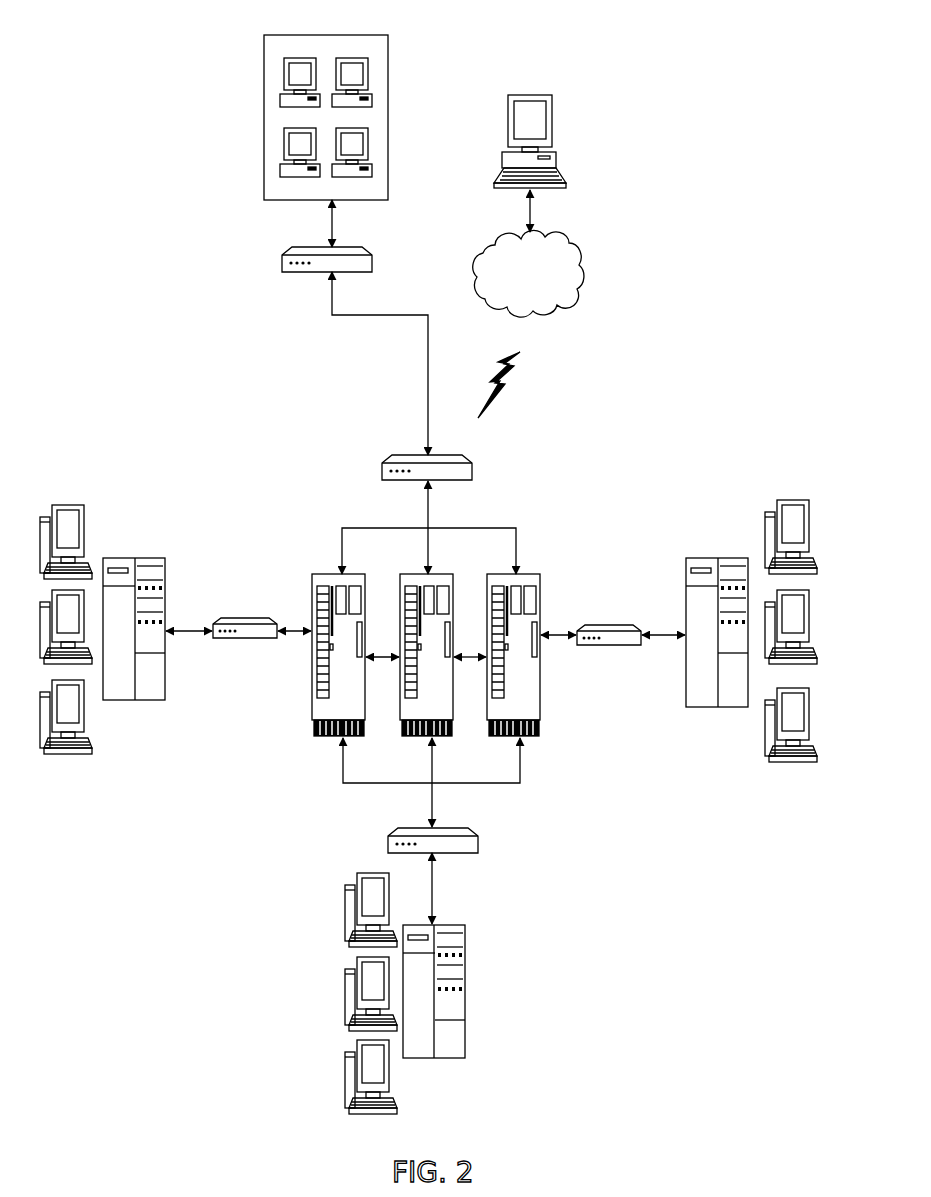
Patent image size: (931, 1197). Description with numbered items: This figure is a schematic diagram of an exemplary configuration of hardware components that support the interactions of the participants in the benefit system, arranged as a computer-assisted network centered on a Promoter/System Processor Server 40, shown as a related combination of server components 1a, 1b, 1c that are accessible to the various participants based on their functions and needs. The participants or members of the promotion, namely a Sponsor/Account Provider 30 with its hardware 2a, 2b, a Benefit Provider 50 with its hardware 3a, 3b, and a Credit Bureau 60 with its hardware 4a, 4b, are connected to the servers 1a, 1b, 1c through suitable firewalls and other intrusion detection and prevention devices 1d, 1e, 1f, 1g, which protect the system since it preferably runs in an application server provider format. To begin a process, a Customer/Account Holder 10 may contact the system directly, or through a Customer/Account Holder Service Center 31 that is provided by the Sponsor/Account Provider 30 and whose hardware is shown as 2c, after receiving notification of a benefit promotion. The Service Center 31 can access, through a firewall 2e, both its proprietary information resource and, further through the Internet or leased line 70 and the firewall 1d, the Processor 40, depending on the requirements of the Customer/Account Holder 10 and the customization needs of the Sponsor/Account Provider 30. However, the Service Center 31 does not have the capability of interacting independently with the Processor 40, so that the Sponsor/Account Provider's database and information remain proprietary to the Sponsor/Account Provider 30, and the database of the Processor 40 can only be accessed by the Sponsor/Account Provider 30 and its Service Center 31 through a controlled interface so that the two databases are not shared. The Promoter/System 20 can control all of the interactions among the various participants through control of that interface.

The server component 1a is at (331, 641).
The server component 1b is at (420, 641).
The server component 1c is at (507, 641).
The firewall 1d is at (429, 501).
The firewall 1e is at (613, 620).
The firewall 1f is at (431, 795).
The firewall 1g is at (238, 613).
The Sponsor/Account Provider hardware component 2a is at (134, 615).
The Sponsor/Account Provider hardware component 2b is at (66, 611).
The Customer/Account Holder Service Center hardware 2c is at (325, 103).
The firewall 2e is at (355, 327).
The Benefit Provider hardware component 3a is at (717, 619).
The Benefit Provider hardware component 3b is at (791, 615).
The Credit Bureau hardware component 4a is at (429, 955).
The Credit Bureau hardware component 4b is at (367, 978).
The Customer/Account Holder 10 is at (603, 112).
The Promoter/System 20 is at (560, 708).
The Sponsor/Account Provider 30 is at (146, 520).
The Customer/Account Holder Service Center 31 is at (247, 52).
The Promoter/System Processor Server 40 is at (418, 640).
The Benefit Provider 50 is at (702, 530).
The Credit Bureau 60 is at (473, 996).
The Internet or leased line 70 is at (523, 253).